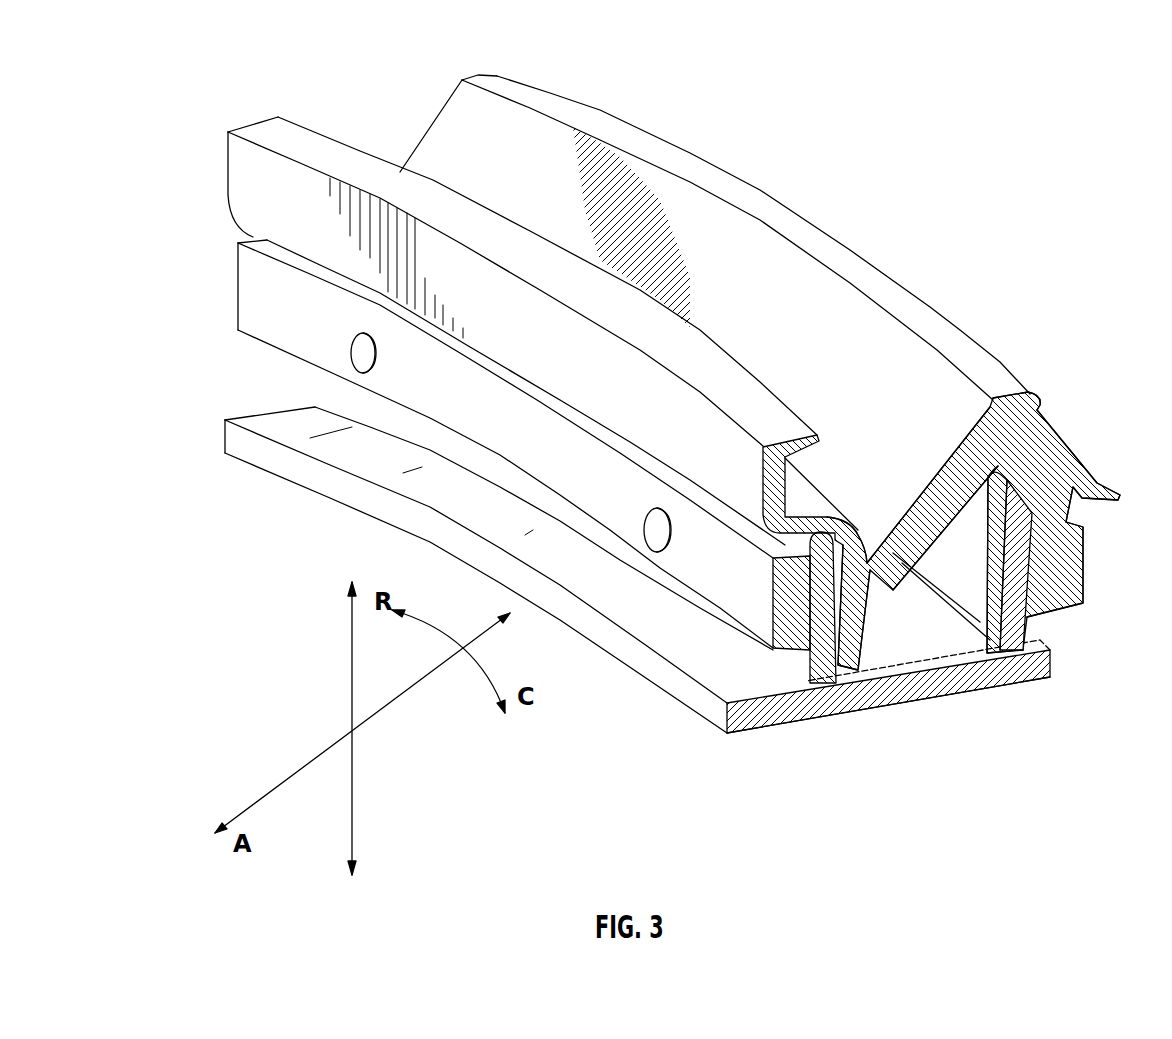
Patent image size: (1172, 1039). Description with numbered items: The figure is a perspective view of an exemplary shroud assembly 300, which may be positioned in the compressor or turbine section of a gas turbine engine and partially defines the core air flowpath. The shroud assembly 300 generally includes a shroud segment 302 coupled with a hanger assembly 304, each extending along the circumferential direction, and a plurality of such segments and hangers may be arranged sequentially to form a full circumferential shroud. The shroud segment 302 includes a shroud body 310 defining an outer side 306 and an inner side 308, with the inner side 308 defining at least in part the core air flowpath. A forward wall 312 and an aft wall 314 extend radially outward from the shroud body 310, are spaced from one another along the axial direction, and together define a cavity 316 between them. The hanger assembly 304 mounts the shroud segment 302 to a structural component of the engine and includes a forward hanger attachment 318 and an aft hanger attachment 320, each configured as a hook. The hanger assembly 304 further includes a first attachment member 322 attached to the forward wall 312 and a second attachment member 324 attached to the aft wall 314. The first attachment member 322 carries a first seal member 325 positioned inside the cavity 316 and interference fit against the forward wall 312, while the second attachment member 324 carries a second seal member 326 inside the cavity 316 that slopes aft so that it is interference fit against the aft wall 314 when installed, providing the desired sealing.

The shroud assembly 300 is at (862, 88).
The shroud segment 302 is at (700, 645).
The hanger assembly 304 is at (950, 292).
The outer side 306 is at (940, 617).
The inner side 308 is at (897, 712).
The shroud body 310 is at (920, 693).
The forward wall 312 is at (810, 693).
The aft wall 314 is at (1017, 598).
The cavity 316 is at (920, 638).
The forward hanger attachment 318 is at (778, 420).
The aft hanger attachment 320 is at (1040, 392).
The first attachment member 322 is at (838, 507).
The second attachment member 324 is at (1060, 437).
The first seal member 325 is at (853, 643).
The second seal member 326 is at (977, 553).